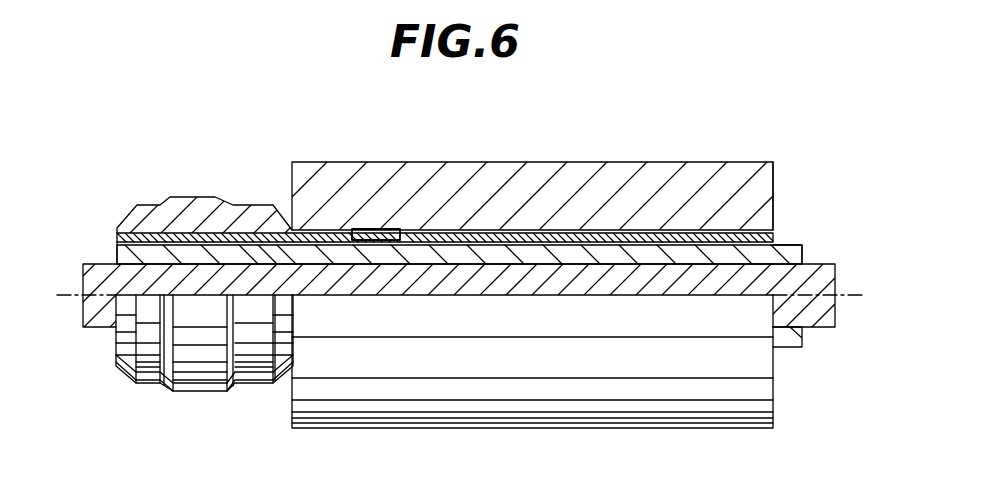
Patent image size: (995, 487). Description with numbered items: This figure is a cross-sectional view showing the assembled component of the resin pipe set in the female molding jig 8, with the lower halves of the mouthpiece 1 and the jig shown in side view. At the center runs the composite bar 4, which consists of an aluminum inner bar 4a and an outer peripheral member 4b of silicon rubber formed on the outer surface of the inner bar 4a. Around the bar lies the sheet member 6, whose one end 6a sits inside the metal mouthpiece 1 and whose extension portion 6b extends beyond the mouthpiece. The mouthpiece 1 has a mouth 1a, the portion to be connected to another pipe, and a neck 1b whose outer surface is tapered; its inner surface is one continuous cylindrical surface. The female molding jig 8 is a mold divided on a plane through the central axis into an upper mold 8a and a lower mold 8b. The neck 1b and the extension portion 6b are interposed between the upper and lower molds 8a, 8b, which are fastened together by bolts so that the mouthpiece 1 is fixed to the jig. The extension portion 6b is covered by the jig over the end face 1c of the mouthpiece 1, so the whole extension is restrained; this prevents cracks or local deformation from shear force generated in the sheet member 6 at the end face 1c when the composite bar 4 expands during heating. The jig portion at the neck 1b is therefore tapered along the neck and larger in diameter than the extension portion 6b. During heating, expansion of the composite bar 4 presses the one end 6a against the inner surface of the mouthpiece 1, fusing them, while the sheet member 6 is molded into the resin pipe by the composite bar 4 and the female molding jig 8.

The mouthpiece 1 is at (259, 256).
The mouth 1a is at (183, 215).
The neck 1b is at (330, 235).
The end face 1c is at (399, 226).
The composite bar 4 is at (123, 177).
The inner bar 4a is at (95, 278).
The outer peripheral member 4b is at (128, 255).
The sheet member 6 is at (672, 232).
The one end of the sheet member 6a is at (270, 246).
The extension portion of the sheet member 6b is at (570, 235).
The female molding jig 8 is at (826, 165).
The upper mold 8a is at (750, 195).
The lower mold 8b is at (733, 368).